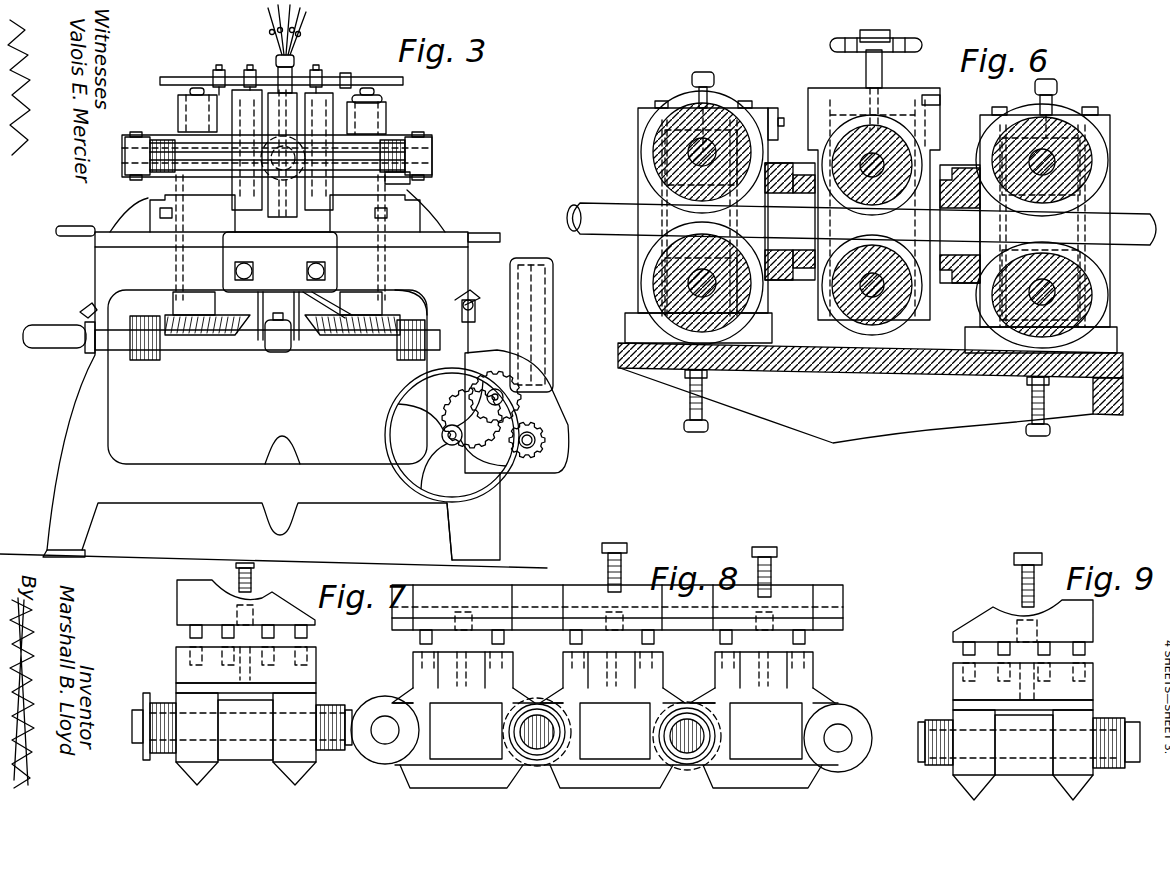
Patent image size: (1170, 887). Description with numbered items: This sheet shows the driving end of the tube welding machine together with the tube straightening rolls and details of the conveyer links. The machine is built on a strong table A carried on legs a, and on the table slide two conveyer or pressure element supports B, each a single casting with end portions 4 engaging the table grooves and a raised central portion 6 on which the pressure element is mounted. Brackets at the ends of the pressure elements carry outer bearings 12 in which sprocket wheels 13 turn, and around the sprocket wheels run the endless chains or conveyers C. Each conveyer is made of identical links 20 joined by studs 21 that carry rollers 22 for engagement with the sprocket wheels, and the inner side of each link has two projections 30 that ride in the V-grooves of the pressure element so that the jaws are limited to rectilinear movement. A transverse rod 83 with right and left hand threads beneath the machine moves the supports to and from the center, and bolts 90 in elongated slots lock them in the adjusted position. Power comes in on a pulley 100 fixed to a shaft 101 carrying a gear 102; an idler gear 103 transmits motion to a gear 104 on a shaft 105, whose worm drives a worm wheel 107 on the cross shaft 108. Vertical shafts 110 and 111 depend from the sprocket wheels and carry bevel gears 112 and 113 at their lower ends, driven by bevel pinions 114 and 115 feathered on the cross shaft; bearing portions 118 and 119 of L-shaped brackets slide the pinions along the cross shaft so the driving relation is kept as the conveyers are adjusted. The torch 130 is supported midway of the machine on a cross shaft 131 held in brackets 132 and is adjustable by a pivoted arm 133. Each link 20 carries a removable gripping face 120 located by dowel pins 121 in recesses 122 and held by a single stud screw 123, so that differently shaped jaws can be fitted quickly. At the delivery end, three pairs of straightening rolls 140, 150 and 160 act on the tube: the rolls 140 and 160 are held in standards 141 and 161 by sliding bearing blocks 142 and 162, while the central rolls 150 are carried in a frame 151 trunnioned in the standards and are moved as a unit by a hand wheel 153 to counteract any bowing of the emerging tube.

In FIG. 3, the table A is at (94, 268).
In FIG. 6, the table A is at (878, 375).
In FIG. 3, the legs a is at (108, 426).
In FIG. 3, the conveyer or pressure element support B is at (435, 210).
In FIG. 3, the endless chain or conveyer C is at (122, 165).
In FIG. 3, the end portion 4 is at (130, 218).
In FIG. 3, the central portion 6 is at (412, 180).
In FIG. 3, the outer bearing 12 is at (178, 105).
In FIG. 3, the sprocket wheel 13 is at (135, 137).
In FIG. 8, the chain link 20 is at (616, 731).
In FIG. 7, the stud or pin 21 is at (135, 740).
In FIG. 8, the stud or pin 21 is at (537, 762).
In FIG. 9, the stud or pin 21 is at (1133, 765).
In FIG. 3, the roller 22 is at (162, 140).
In FIG. 7, the roller 22 is at (328, 750).
In FIG. 8, the roller 22 is at (690, 766).
In FIG. 9, the roller 22 is at (938, 725).
In FIG. 7, the projection 30 is at (280, 768).
In FIG. 8, the projection 30 is at (507, 788).
In FIG. 9, the projection 30 is at (1060, 782).
In FIG. 3, the transverse rod 83 is at (78, 226).
In FIG. 3, the bolt 90 is at (178, 232).
In FIG. 3, the power pulley 100 is at (388, 420).
In FIG. 3, the shaft 101 is at (442, 435).
In FIG. 3, the gear 102 is at (448, 412).
In FIG. 3, the idler gear 103 is at (522, 400).
In FIG. 3, the gear 104 is at (546, 441).
In FIG. 3, the shaft 105 is at (528, 448).
In FIG. 3, the worm wheel 107 is at (554, 300).
In FIG. 3, the cross shaft 108 is at (478, 308).
In FIG. 3, the vertical shaft 110 is at (197, 88).
In FIG. 3, the vertical shaft 111 is at (367, 88).
In FIG. 3, the bevel gear 112 is at (222, 335).
In FIG. 3, the bevel gear 113 is at (325, 335).
In FIG. 3, the bevel pinion 114 is at (148, 360).
In FIG. 3, the bevel pinion 115 is at (400, 350).
In FIG. 3, the bearing portion 118 is at (128, 350).
In FIG. 3, the bearing portion 119 is at (432, 310).
In FIG. 7, the removable gripping face 120 is at (177, 605).
In FIG. 8, the removable gripping face 120 is at (510, 612).
In FIG. 9, the removable gripping face 120 is at (980, 625).
In FIG. 7, the dowel pin 121 is at (190, 630).
In FIG. 8, the dowel pin 121 is at (504, 638).
In FIG. 9, the dowel pin 121 is at (1085, 649).
In FIG. 7, the recess 122 is at (176, 656).
In FIG. 8, the recess 122 is at (513, 668).
In FIG. 9, the recess 122 is at (1093, 674).
In FIG. 7, the stud screw 123 is at (251, 580).
In FIG. 8, the stud screw 123 is at (608, 557).
In FIG. 9, the stud screw 123 is at (1022, 580).
In FIG. 3, the torch 130 is at (300, 60).
In FIG. 3, the cross shaft 131 is at (162, 77).
In FIG. 3, the bearing or bracket 132 is at (248, 70).
In FIG. 3, the pivoted arm 133 is at (290, 95).
In FIG. 6, the roll 140 is at (633, 171).
In FIG. 6, the standard 141 is at (660, 120).
In FIG. 6, the sliding bearing block 142 is at (660, 140).
In FIG. 6, the roll 150 is at (822, 93).
In FIG. 6, the frame 151 is at (930, 140).
In FIG. 6, the hand wheel 153 is at (832, 44).
In FIG. 6, the roll 160 is at (1118, 165).
In FIG. 3, the standard 161 is at (282, 151).
In FIG. 6, the standard 161 is at (1100, 120).
In FIG. 6, the sliding bearing block 162 is at (1110, 190).